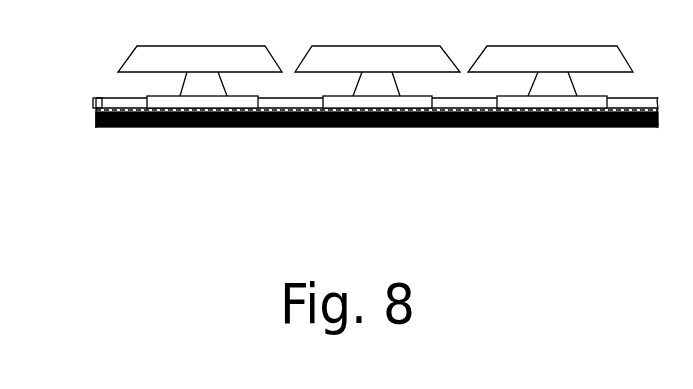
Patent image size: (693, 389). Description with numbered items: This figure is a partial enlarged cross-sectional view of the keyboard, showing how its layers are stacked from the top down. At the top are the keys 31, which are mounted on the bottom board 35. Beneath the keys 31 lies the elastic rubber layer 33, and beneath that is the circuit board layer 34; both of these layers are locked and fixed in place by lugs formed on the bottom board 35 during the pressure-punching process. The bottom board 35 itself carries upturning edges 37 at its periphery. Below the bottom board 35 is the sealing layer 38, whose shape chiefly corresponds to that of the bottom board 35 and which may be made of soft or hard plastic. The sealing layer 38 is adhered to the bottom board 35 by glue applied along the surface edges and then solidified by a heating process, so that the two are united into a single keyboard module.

The keys 31 is at (241, 50).
The elastic rubber layer 33 is at (97, 98).
The circuit board layer 34 is at (96, 110).
The bottom board 35 is at (96, 120).
The upturning edges 37 is at (647, 100).
The sealing layer 38 is at (160, 128).